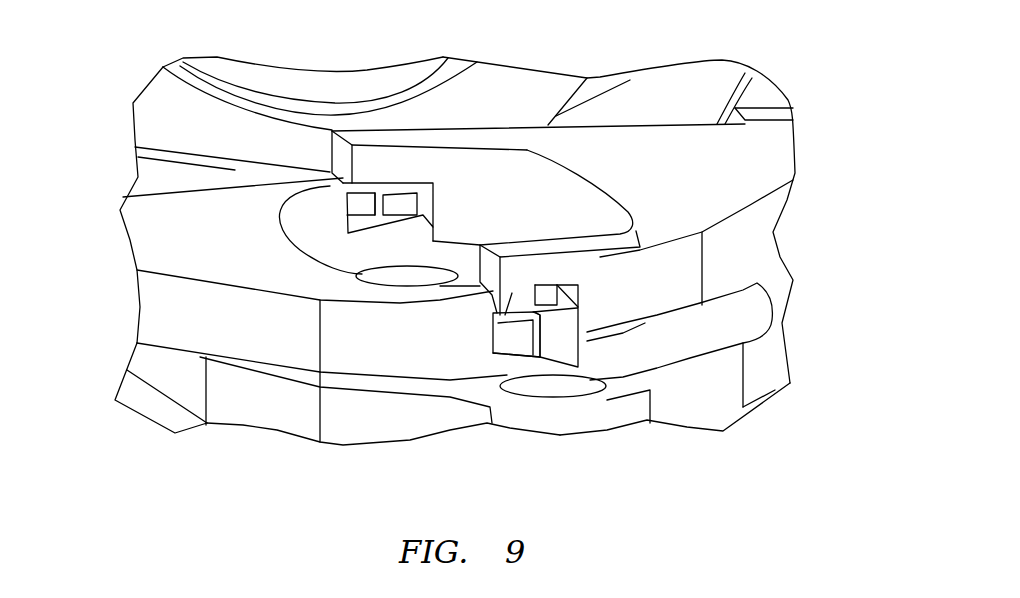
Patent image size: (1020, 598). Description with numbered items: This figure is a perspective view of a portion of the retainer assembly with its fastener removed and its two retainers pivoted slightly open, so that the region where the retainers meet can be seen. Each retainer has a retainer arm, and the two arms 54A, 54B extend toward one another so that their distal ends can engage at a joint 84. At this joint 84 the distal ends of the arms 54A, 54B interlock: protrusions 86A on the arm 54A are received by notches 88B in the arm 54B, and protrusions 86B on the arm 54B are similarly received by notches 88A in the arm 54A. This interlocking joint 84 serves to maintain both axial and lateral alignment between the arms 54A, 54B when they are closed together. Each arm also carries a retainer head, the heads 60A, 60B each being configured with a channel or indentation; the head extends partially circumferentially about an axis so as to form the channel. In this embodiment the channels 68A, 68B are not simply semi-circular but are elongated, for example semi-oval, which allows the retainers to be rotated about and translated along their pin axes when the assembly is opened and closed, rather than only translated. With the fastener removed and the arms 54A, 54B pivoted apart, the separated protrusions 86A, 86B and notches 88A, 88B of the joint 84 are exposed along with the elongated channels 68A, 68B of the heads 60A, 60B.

The retainer arm 54A is at (158, 308).
The retainer arm 54B is at (765, 231).
The retainer head 60A is at (357, 358).
The retainer head 60B is at (650, 307).
The channel 68A is at (316, 226).
The channel 68B is at (528, 183).
The joint 84 is at (557, 390).
The protrusion 86A is at (393, 180).
The protrusion 86B is at (365, 180).
The notch 88A is at (603, 295).
The notch 88B is at (512, 340).